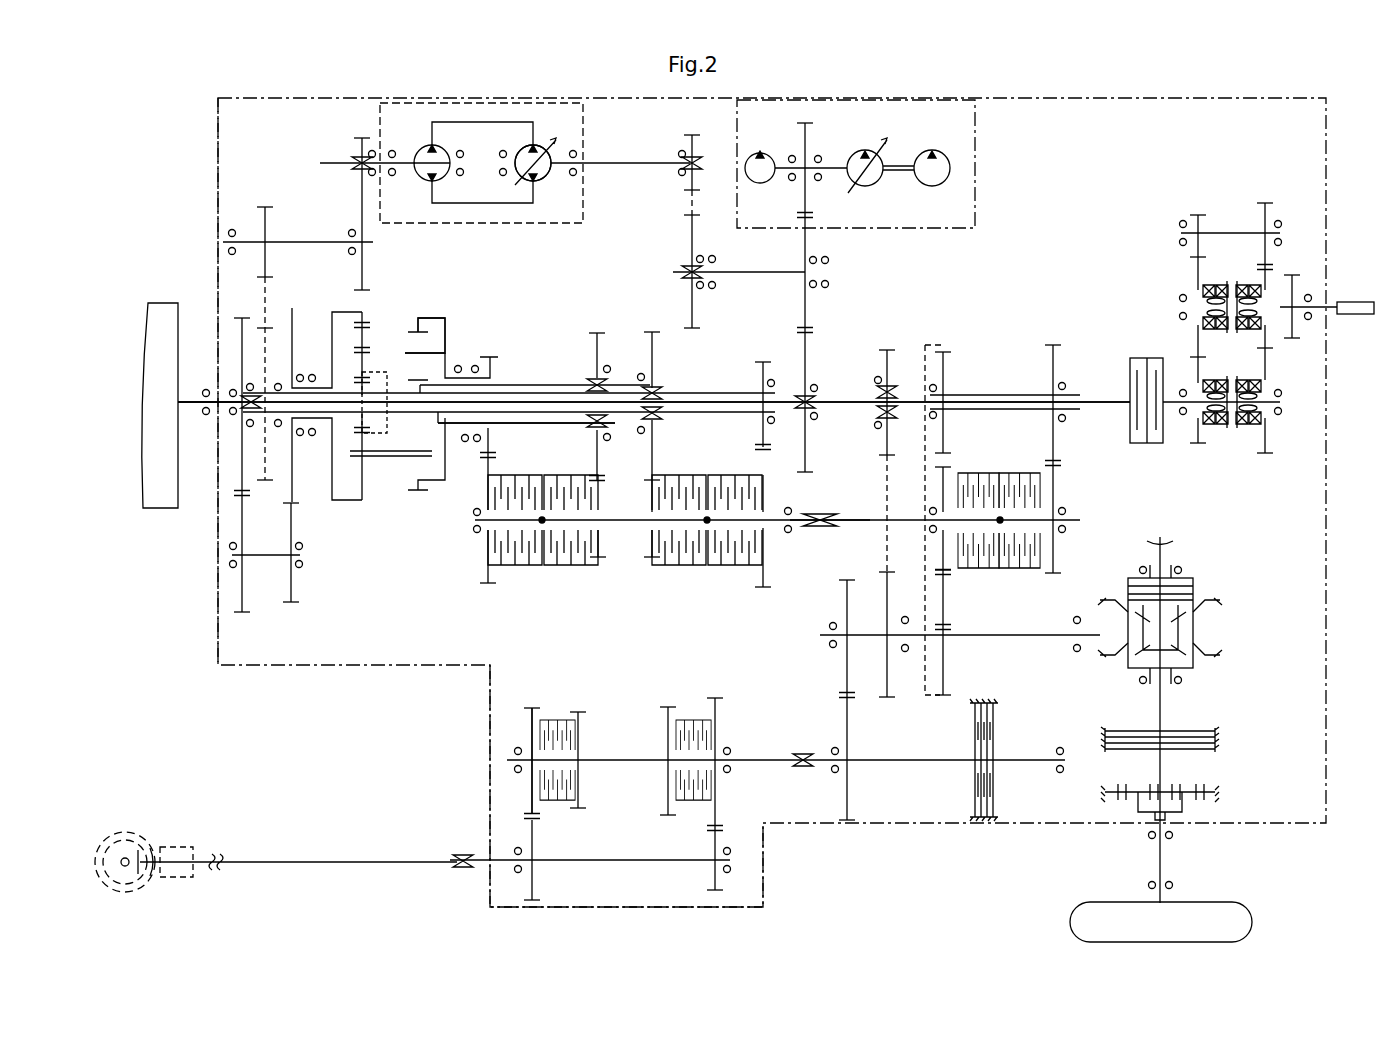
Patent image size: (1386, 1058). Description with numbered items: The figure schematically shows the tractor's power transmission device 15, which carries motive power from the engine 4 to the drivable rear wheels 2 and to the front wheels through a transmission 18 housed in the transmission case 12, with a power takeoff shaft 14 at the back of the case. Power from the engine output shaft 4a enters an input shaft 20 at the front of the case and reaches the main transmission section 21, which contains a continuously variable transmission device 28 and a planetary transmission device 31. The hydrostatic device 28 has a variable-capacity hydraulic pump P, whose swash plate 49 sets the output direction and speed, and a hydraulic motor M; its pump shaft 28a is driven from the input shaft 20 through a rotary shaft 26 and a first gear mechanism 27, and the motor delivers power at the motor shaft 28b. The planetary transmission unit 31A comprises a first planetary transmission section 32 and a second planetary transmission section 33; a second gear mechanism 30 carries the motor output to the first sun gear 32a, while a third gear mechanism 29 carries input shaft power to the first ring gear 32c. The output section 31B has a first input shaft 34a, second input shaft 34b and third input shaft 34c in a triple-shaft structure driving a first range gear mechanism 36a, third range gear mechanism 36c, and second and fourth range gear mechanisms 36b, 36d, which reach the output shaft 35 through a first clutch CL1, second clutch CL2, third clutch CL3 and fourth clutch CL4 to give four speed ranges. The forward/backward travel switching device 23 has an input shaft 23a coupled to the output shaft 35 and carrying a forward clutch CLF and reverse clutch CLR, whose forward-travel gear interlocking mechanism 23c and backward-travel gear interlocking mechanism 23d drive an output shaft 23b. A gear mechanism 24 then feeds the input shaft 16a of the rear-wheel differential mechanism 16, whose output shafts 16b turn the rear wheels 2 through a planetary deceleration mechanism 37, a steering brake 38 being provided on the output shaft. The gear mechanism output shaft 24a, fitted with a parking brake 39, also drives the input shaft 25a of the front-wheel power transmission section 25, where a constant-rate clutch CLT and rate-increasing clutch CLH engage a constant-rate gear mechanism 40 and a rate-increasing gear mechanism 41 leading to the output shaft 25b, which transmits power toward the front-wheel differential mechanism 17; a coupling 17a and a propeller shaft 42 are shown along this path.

The rear wheels 2 is at (1248, 920).
The engine 4 is at (165, 510).
The output shaft 4a is at (190, 400).
The transmission case 12 is at (216, 112).
The power takeoff shaft 14 is at (1355, 300).
The power transmission device 15 is at (173, 199).
The rear-wheel differential mechanism 16 is at (1243, 617).
The input shaft 16a is at (1037, 642).
The output shafts 16b is at (1163, 548).
The front-wheel differential mechanism 17 is at (132, 835).
The coupling 17a is at (175, 848).
The transmission 18 is at (401, 656).
The input shaft 20 is at (225, 385).
The main transmission section 21 is at (381, 579).
The forward/backward travel switching device 23 is at (1037, 316).
The input shaft 23a is at (858, 515).
The output shaft 23b is at (902, 368).
The forward-travel gear interlocking mechanism 23c is at (1060, 473).
The backward-travel gear interlocking mechanism 23d is at (950, 365).
The gear mechanism 24 is at (849, 360).
The output shaft 24a is at (932, 765).
The front-wheel power transmission section 25 is at (616, 702).
The input shaft 25a is at (768, 755).
The output shaft 25b is at (640, 862).
The rotary shaft 26 is at (712, 398).
The first gear mechanism 27 is at (737, 252).
The continuously variable transmission device 28 is at (583, 108).
The pump shaft 28a is at (604, 168).
The motor shaft 28b is at (356, 172).
The third gear mechanism 29 is at (230, 591).
The second gear mechanism 30 is at (279, 174).
The planetary transmission device 31 is at (555, 290).
The planetary transmission unit 31A is at (414, 308).
The output section 31B is at (639, 600).
The first planetary transmission section 32 is at (350, 526).
The first sun gear 32a is at (380, 395).
The first ring gear 32c is at (365, 497).
The second planetary transmission section 33 is at (440, 525).
The first input shaft 34a is at (470, 360).
The second input shaft 34b is at (565, 380).
The third input shaft 34c is at (728, 415).
The output shaft 35 is at (820, 538).
The first range gear mechanism 36a is at (486, 595).
The second range gear mechanism 36b is at (771, 563).
The third range gear mechanism 36c is at (605, 345).
The fourth range gear mechanism 36d is at (650, 503).
The planetary deceleration mechanism 37 is at (1222, 798).
The steering brake 38 is at (1222, 736).
The parking brake 39 is at (995, 775).
The constant-rate gear mechanism 40 is at (530, 722).
The rate-increasing gear mechanism 41 is at (718, 802).
The front propeller shaft 42 is at (318, 858).
The swash plate 49 is at (530, 182).
The hydraulic motor M is at (425, 150).
The hydraulic pump P is at (540, 185).
The first clutch CL1 is at (520, 570).
The second clutch CL2 is at (735, 570).
The third clutch CL3 is at (570, 570).
The fourth clutch CL4 is at (685, 570).
The reverse clutch CLR is at (1000, 472).
The forward clutch CLF is at (1025, 568).
The rate-increasing clutch CLH is at (690, 718).
The constant-rate clutch CLT is at (562, 802).